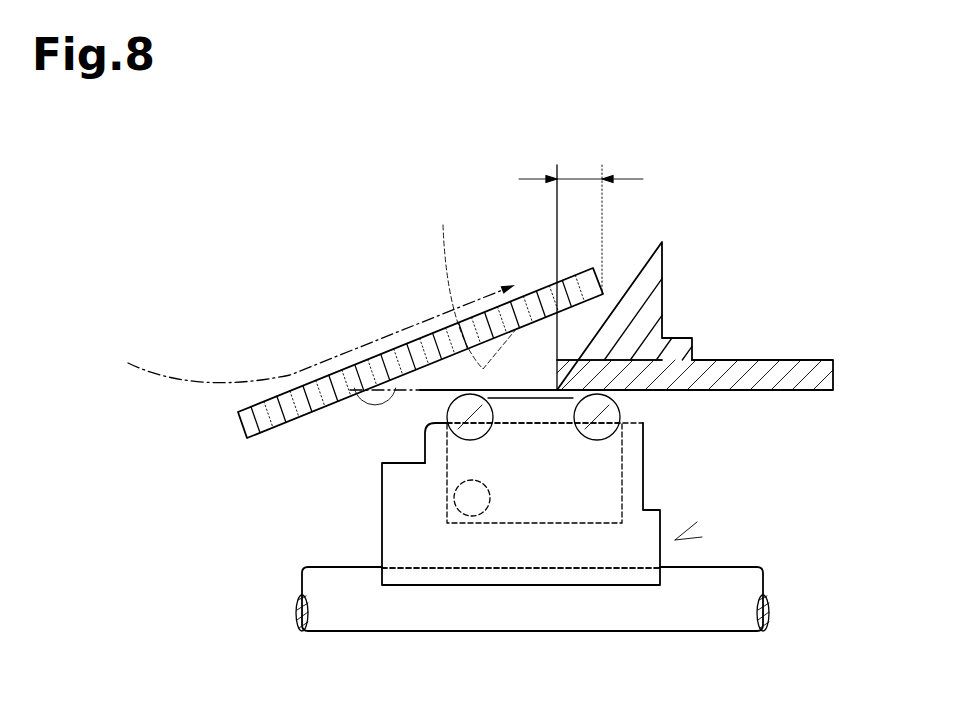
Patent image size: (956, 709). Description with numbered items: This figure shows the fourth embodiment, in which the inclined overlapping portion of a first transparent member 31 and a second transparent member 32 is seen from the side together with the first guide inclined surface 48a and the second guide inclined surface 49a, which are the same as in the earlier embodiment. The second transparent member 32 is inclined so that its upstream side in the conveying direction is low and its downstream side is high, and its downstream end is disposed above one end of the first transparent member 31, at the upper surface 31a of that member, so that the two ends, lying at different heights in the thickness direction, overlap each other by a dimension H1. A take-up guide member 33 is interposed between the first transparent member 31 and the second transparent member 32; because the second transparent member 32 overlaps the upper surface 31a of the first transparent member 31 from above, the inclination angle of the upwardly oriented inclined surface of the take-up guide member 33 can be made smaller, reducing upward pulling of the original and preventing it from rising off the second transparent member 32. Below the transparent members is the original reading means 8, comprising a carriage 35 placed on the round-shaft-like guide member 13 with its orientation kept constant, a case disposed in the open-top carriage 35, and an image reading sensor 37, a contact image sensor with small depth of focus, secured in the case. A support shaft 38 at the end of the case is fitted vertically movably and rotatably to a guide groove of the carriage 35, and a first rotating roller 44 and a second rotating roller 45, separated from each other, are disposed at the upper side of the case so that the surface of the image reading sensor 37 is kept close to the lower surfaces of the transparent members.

The overlap dimension H1 is at (574, 178).
The original reading means 8 is at (678, 539).
The round-shaft-like guide member 13 is at (727, 613).
The first transparent member 31 is at (805, 378).
The upper surface of receiving plate 31a is at (597, 362).
The second transparent member 32 is at (278, 432).
The take-up guide member 33 is at (650, 277).
The carriage 35 is at (522, 638).
The image reading sensor 37 is at (542, 413).
The support shaft 38 is at (472, 498).
The first rotating roller 44 is at (447, 410).
The second rotating roller 45 is at (620, 410).
The first guide inclined surface 48a is at (338, 364).
The second guide inclined surface 49a is at (435, 301).